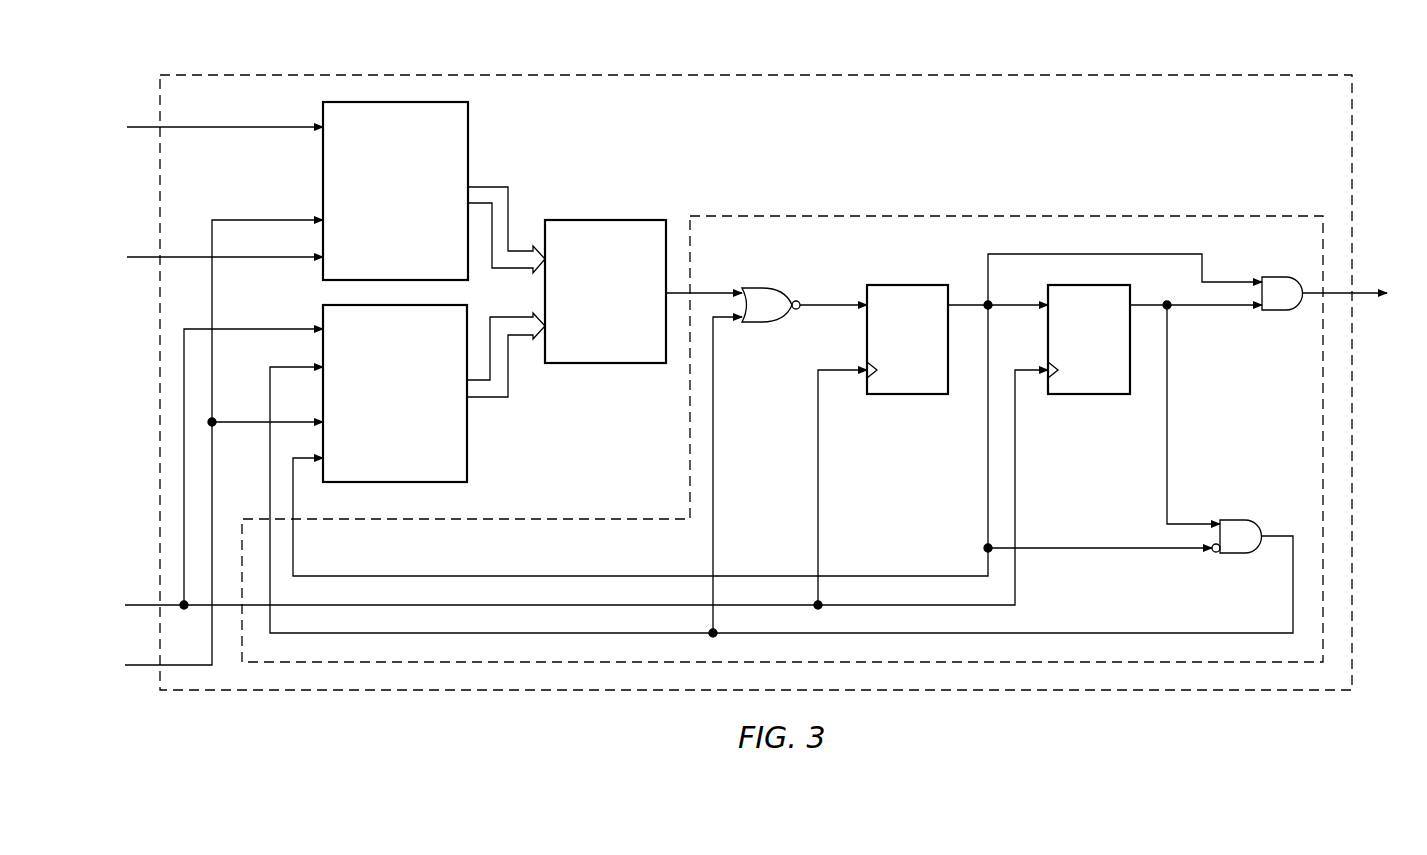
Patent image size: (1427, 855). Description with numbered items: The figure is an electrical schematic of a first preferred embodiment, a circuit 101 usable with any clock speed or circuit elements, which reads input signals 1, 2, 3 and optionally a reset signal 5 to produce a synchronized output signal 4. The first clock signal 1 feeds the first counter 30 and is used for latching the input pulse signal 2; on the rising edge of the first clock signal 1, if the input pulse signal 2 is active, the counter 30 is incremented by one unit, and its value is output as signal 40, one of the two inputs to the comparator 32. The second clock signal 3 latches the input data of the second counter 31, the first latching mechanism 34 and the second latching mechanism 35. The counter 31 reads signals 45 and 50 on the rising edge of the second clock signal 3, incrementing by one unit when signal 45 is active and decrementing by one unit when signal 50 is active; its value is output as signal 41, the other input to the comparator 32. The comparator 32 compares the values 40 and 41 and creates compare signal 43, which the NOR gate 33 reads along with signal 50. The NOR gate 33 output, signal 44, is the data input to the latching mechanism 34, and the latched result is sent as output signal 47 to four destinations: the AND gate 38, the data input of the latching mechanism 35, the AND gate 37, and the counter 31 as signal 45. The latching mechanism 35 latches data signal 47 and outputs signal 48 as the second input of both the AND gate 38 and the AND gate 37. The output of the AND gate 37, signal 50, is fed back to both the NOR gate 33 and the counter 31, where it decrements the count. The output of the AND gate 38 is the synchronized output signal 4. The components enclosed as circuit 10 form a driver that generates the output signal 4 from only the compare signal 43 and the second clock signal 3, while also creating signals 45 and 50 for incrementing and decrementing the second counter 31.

The circuit 101 is at (1228, 74).
The driver 10 is at (1082, 216).
The first counter 30 is at (470, 113).
The second counter 31 is at (468, 465).
The comparator 32 is at (608, 220).
The NOR gate 33 is at (762, 288).
The first latching mechanism 34 is at (908, 394).
The second latching mechanism 35 is at (1088, 394).
The AND gate 37 is at (1237, 520).
The AND gate 38 is at (1280, 312).
The signal 40 is at (510, 203).
The signal 41 is at (510, 380).
The compare signal 43 is at (715, 290).
The signal 44 is at (828, 305).
The signal 45 is at (878, 576).
The output signal 47 is at (977, 305).
The signal 48 is at (1140, 303).
The signal 50 is at (1113, 620).
The first clock signal 1 is at (142, 126).
The input pulse signal 2 is at (142, 256).
The second clock signal 3 is at (140, 604).
The synchronized output signal 4 is at (1370, 289).
The reset signal 5 is at (140, 664).